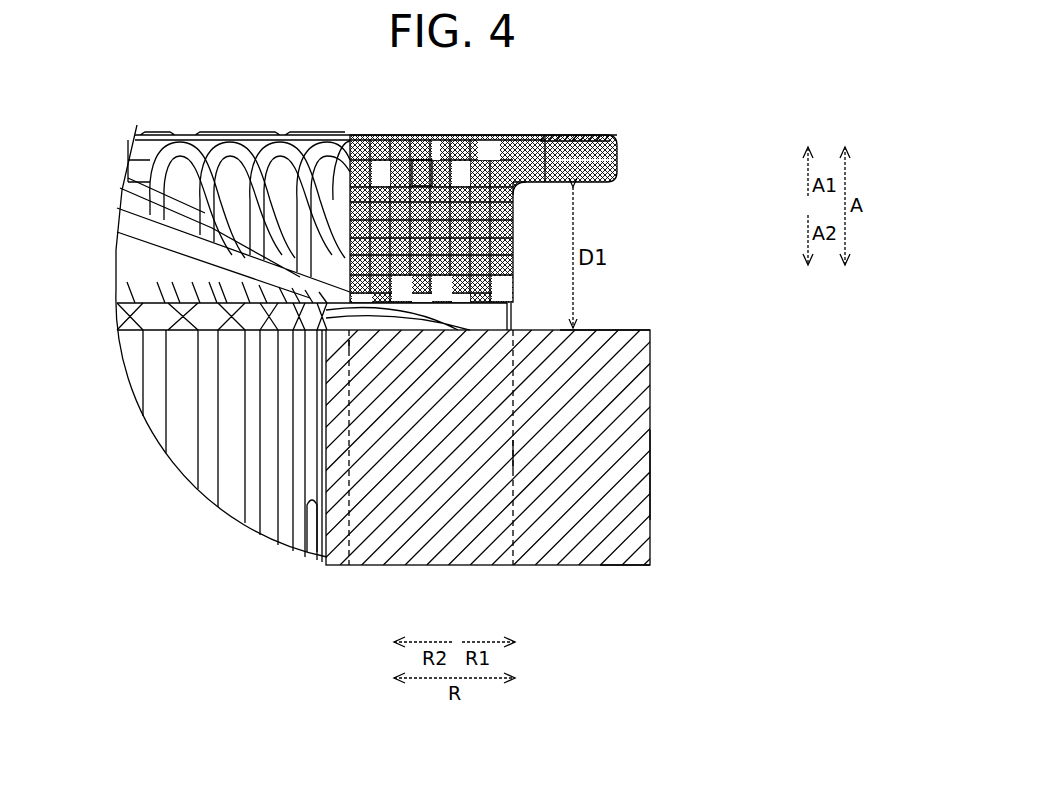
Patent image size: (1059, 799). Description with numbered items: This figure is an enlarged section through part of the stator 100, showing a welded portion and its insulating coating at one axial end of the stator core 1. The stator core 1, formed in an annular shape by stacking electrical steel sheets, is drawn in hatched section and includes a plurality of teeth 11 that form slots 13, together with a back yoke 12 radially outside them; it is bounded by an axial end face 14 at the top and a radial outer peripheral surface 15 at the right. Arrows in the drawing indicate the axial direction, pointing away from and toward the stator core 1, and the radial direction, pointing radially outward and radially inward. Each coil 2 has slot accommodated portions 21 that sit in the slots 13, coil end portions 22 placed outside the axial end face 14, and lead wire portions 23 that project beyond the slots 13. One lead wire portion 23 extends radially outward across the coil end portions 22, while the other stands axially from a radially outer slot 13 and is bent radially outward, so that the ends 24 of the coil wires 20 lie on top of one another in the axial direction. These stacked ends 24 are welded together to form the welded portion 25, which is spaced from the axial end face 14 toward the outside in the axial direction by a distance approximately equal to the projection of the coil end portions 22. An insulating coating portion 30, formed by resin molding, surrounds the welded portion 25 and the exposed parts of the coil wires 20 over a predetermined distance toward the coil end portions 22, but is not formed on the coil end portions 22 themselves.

The stator 100 is at (137, 124).
The coil 2 is at (292, 124).
The stator core 1 is at (668, 370).
The teeth 11 is at (307, 552).
The back yoke 12 is at (652, 522).
The slots 13 is at (500, 432).
The axial end face 14 is at (640, 328).
The radial outer peripheral surface 15 is at (652, 478).
The coil wire 20 is at (612, 147).
The slot accommodated portion 21 is at (515, 455).
The coil end portion 22 is at (420, 172).
The lead wire portion 23 is at (392, 136).
The end 24 is at (556, 130).
The welded portion 25 is at (617, 162).
The insulating coating portion 30 is at (613, 135).